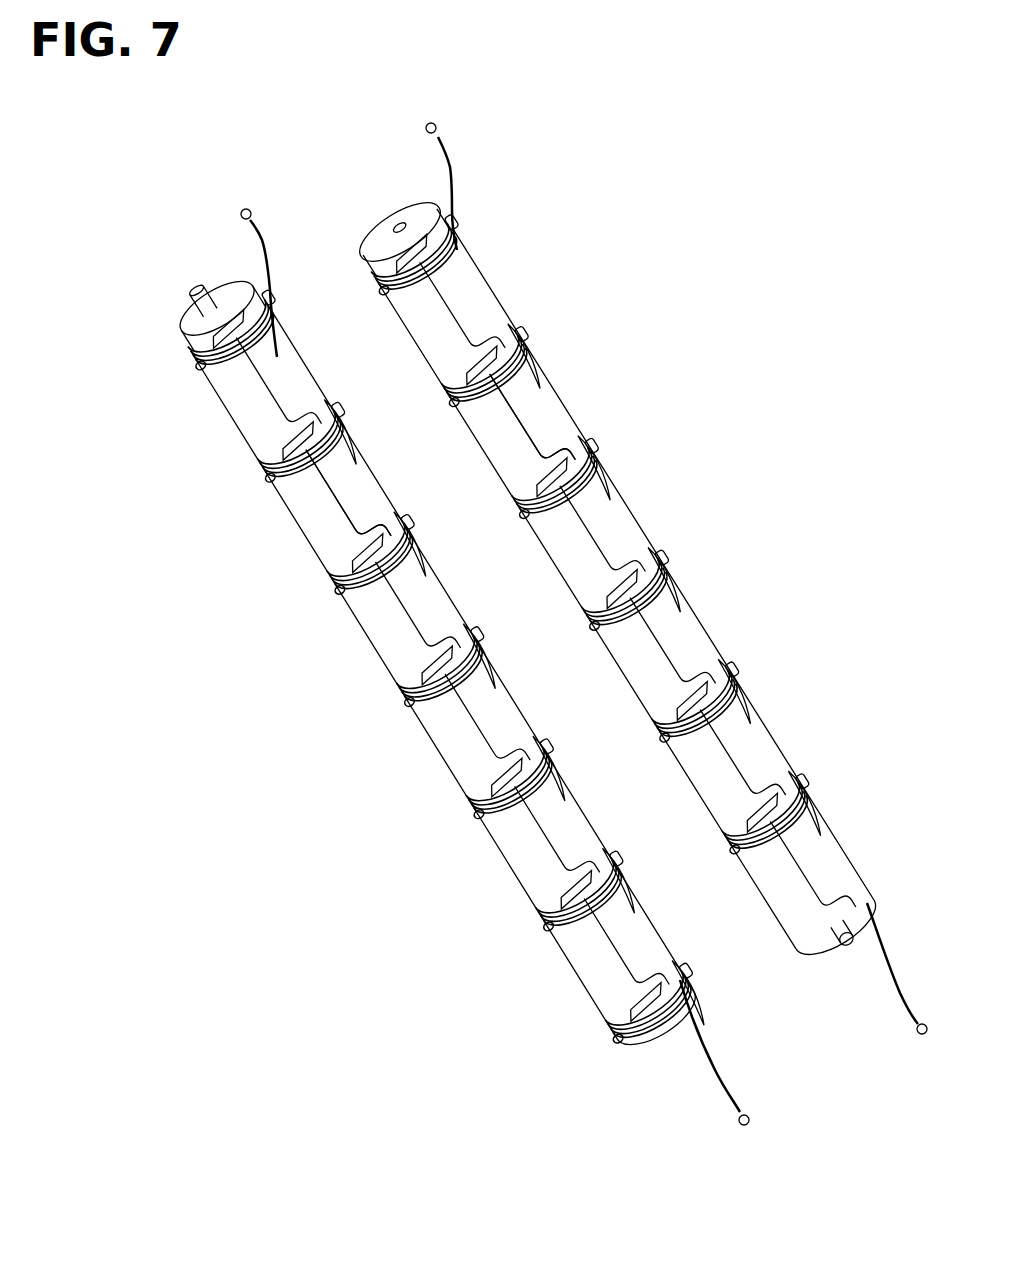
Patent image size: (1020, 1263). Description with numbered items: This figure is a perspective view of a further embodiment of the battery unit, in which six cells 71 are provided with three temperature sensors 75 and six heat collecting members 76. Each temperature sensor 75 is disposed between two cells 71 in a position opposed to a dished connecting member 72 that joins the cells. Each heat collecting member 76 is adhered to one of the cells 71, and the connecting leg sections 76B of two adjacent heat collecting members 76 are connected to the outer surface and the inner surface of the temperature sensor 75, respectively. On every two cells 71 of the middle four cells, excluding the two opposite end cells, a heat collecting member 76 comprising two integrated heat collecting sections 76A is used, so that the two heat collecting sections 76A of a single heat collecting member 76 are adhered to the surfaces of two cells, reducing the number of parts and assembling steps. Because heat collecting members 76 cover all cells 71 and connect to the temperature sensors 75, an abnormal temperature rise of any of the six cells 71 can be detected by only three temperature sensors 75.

The cell 71 is at (240, 423).
The dished connecting member 72 is at (405, 712).
The temperature sensor 75 is at (347, 457).
The heat collecting member 76 is at (318, 372).
The heat collecting section 76A is at (310, 397).
The connecting leg section 76B is at (340, 430).